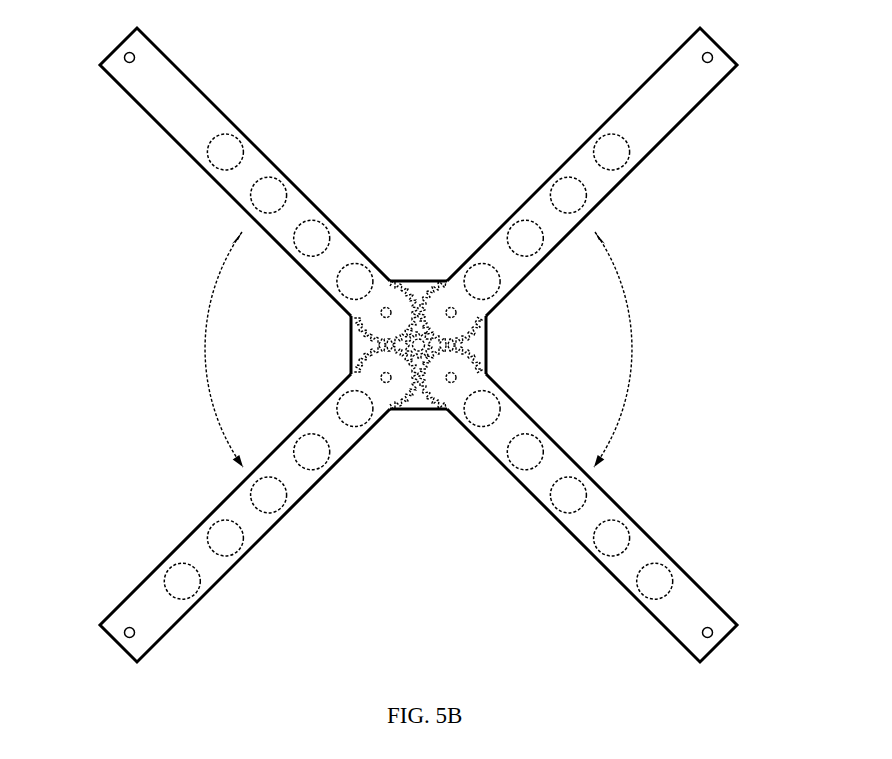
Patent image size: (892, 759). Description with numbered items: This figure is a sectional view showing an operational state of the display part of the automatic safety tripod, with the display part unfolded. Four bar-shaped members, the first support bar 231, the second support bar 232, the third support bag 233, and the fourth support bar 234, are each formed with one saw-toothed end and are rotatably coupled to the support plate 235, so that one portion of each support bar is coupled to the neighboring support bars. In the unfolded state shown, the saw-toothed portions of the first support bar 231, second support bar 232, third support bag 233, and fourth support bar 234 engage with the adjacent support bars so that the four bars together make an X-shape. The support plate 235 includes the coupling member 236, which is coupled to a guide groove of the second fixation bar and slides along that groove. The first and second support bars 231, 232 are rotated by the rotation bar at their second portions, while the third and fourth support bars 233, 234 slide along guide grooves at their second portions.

The first support bar 231 is at (150, 92).
The second support bar 232 is at (687, 92).
The third support bag 233 is at (150, 593).
The fourth support bar 234 is at (687, 593).
The support plate 235 is at (422, 281).
The coupling member 236 is at (407, 357).